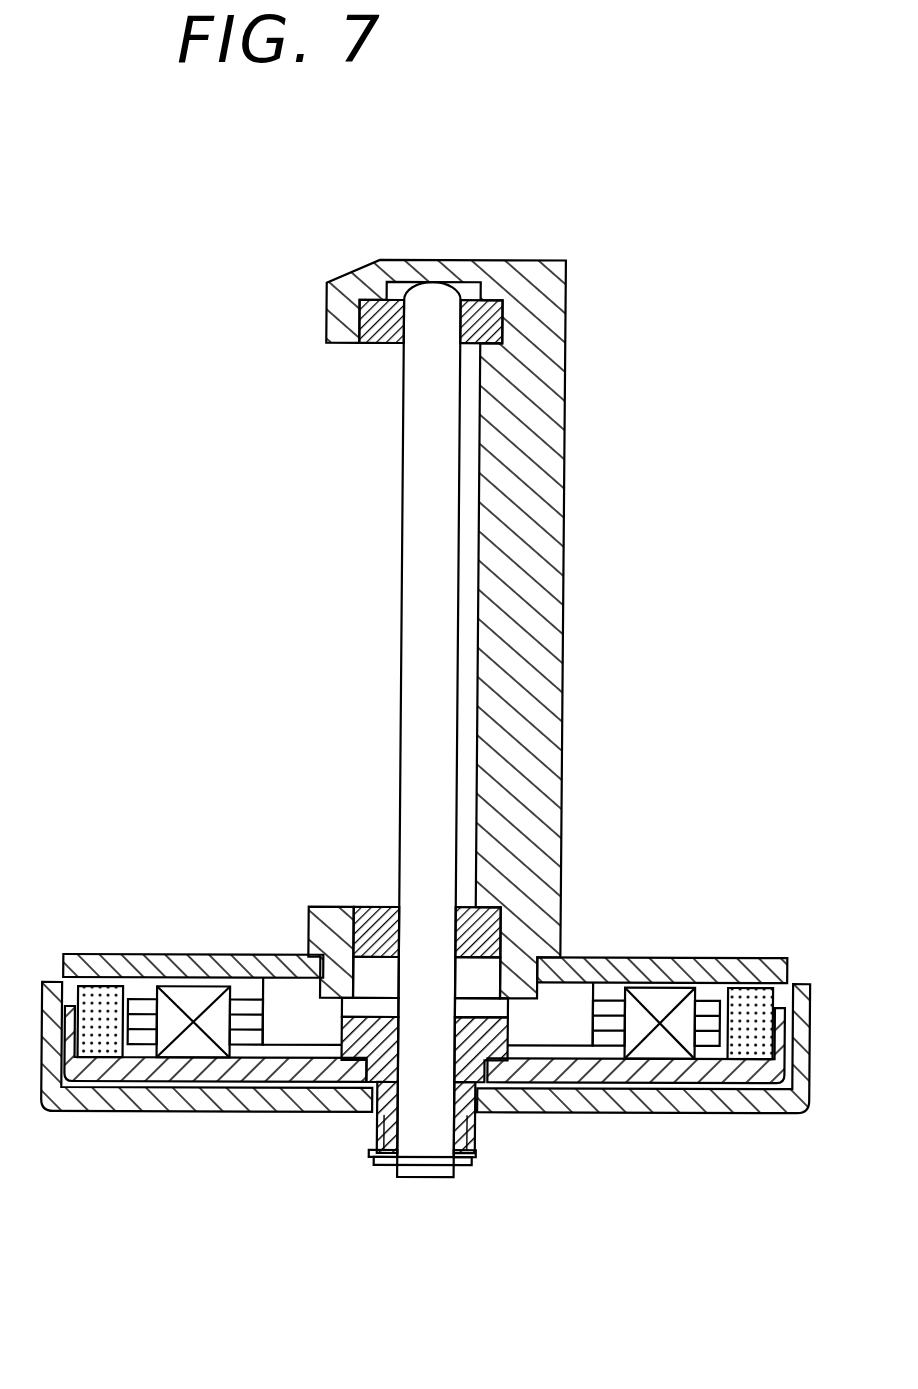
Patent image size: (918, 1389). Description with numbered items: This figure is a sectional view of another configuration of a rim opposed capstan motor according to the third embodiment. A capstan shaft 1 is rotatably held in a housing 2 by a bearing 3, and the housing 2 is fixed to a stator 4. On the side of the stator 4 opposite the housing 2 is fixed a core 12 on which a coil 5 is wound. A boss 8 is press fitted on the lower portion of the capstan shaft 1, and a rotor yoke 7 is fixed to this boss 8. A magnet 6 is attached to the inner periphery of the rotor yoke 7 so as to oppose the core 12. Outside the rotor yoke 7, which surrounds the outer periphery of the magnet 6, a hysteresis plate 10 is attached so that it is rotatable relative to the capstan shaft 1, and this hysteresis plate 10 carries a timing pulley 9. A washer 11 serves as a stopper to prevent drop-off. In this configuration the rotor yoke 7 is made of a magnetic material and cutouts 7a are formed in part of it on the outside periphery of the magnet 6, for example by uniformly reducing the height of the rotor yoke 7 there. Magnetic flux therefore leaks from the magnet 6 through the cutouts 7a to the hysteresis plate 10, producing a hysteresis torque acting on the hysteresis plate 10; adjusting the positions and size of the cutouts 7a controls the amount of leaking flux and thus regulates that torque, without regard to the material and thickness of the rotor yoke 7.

The capstan shaft 1 is at (407, 562).
The housing 2 is at (557, 473).
The bearing 3 is at (372, 344).
The stator 4 is at (620, 958).
The coil 5 is at (665, 998).
The magnet 6 is at (107, 1058).
The rotor yoke 7 is at (240, 1070).
The cutouts 7a is at (72, 1005).
The boss 8 is at (350, 1025).
The timing pulley 9 is at (478, 1130).
The hysteresis plate 10 is at (578, 1100).
The washer 11 is at (443, 1180).
The core 12 is at (712, 1003).